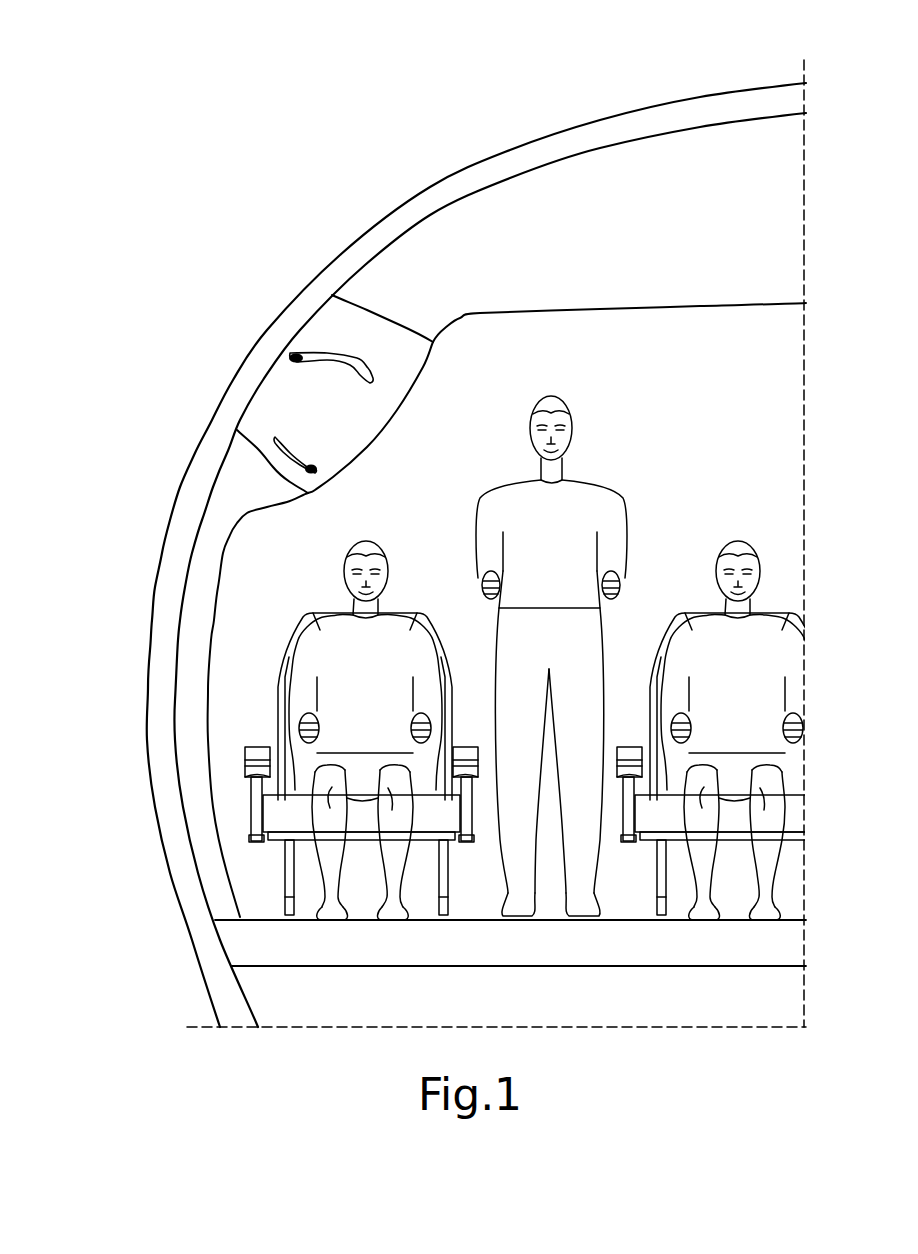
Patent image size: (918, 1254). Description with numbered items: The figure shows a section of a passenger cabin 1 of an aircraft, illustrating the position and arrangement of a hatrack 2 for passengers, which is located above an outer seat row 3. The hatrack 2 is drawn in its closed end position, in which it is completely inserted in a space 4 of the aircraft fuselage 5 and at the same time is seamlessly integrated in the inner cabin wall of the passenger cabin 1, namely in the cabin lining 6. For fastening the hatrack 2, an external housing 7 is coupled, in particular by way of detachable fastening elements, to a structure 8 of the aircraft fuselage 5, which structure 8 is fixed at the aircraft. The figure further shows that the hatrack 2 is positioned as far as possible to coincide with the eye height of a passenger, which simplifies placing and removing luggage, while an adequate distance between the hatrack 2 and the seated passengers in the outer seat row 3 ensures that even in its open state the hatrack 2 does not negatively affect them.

The passenger cabin 1 is at (697, 405).
The hatrack 2 is at (255, 453).
The outer seat row 3 is at (256, 812).
The space 4 is at (484, 215).
The aircraft fuselage 5 is at (146, 623).
The cabin lining 6 is at (582, 308).
The external housing 7 is at (377, 307).
The structure 8 is at (260, 385).